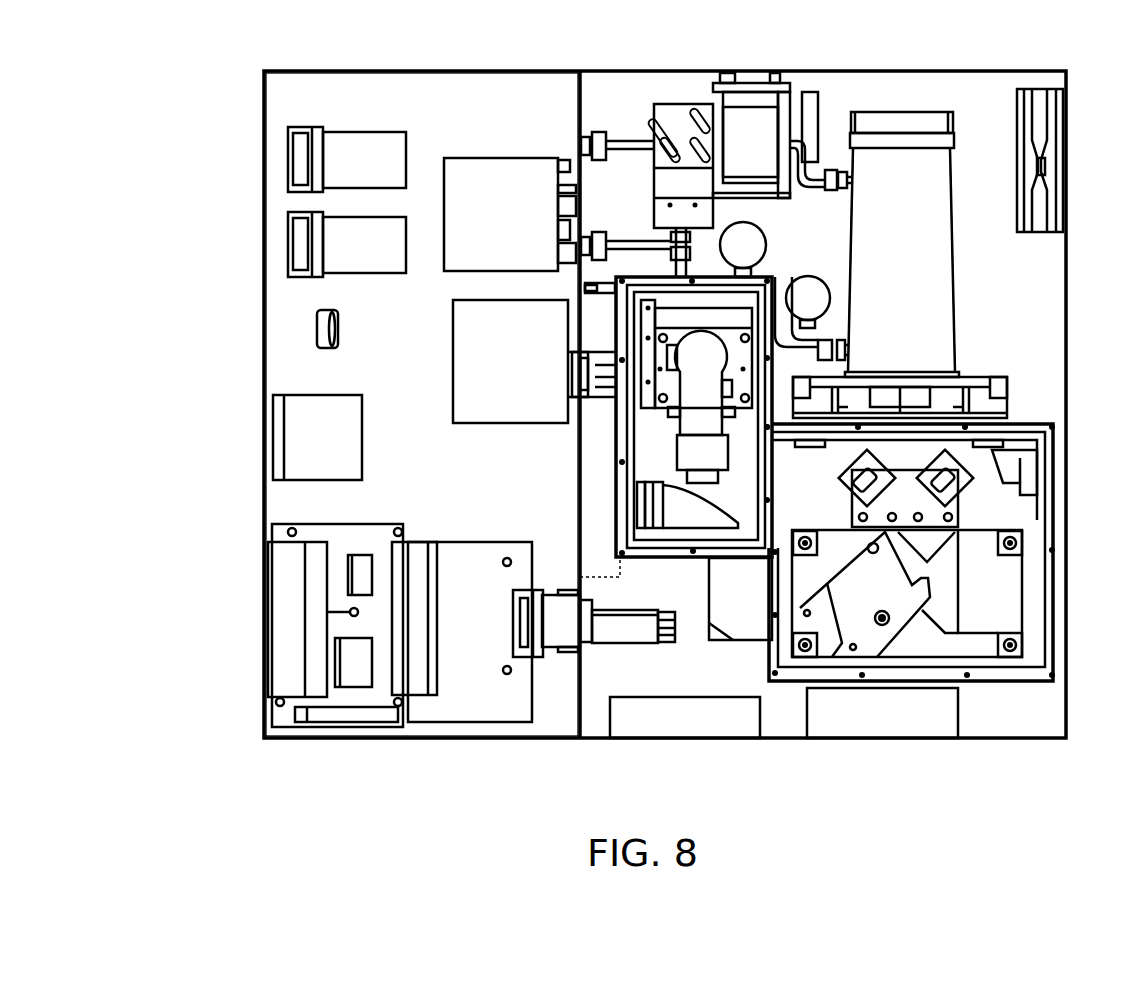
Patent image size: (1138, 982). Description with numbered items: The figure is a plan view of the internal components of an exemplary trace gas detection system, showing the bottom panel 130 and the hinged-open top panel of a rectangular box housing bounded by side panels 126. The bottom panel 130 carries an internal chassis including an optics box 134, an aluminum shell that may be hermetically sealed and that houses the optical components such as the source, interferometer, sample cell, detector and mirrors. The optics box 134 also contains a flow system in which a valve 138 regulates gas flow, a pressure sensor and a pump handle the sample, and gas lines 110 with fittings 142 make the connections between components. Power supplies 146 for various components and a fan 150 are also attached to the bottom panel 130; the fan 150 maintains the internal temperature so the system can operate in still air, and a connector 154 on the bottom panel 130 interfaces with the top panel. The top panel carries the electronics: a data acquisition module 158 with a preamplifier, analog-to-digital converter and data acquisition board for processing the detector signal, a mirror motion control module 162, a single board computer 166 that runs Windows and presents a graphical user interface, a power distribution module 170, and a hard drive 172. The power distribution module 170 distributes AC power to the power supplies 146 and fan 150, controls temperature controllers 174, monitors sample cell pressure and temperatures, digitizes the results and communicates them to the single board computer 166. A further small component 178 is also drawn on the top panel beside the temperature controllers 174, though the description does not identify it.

The gas lines 110 is at (633, 138).
The side panels 126 is at (238, 508).
The bottom panel 130 is at (321, 108).
The optics box 134 is at (1065, 745).
The valve 138 is at (748, 242).
The fittings 142 is at (601, 130).
The power supplies 146 is at (588, 542).
The fan 150 is at (1045, 122).
The connector 154 is at (632, 630).
The data acquisition module 158 is at (498, 168).
The mirror motion control module 162 is at (452, 370).
The single board computer 166 is at (346, 622).
The power distribution module 170 is at (462, 700).
The hard drive 172 is at (309, 437).
The temperature controllers 174 is at (286, 210).
The fuse 178 is at (313, 312).